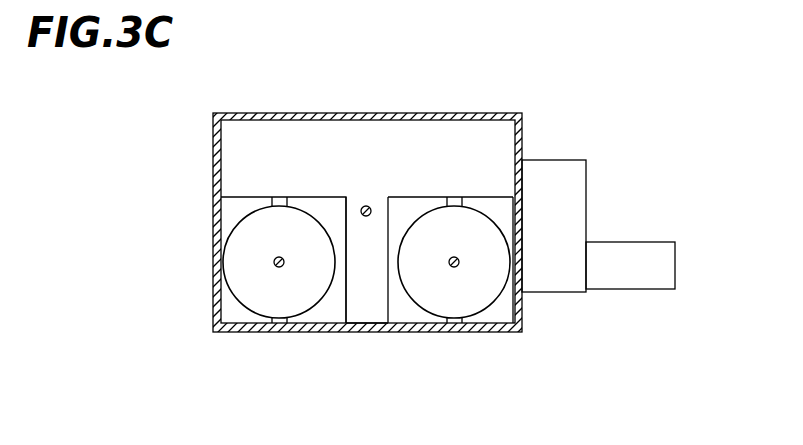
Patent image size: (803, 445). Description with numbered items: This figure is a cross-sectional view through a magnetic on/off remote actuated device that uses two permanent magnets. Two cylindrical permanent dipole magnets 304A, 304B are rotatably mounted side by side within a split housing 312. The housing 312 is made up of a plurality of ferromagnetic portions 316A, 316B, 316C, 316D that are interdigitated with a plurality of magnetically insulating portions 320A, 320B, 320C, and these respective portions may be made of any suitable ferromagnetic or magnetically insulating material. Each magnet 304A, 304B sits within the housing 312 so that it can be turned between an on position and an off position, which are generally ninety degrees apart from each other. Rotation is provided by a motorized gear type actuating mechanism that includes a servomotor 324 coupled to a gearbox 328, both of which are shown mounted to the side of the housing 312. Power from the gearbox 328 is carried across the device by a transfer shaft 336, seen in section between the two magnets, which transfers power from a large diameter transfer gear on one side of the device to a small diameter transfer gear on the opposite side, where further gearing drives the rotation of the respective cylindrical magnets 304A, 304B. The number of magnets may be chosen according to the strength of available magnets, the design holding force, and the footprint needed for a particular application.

The split housing 312 is at (447, 112).
The transfer shaft 336 is at (366, 205).
The cylindrical permanent dipole magnet 304A is at (233, 272).
The cylindrical permanent dipole magnet 304B is at (485, 292).
The ferromagnetic portion 316A is at (225, 333).
The ferromagnetic portion 316B is at (318, 333).
The ferromagnetic portion 316C is at (416, 333).
The ferromagnetic portion 316D is at (505, 333).
The magnetically insulating portion 320A is at (276, 333).
The magnetically insulating portion 320B is at (362, 333).
The magnetically insulating portion 320C is at (455, 333).
The gearbox 328 is at (592, 189).
The servomotor 324 is at (661, 240).